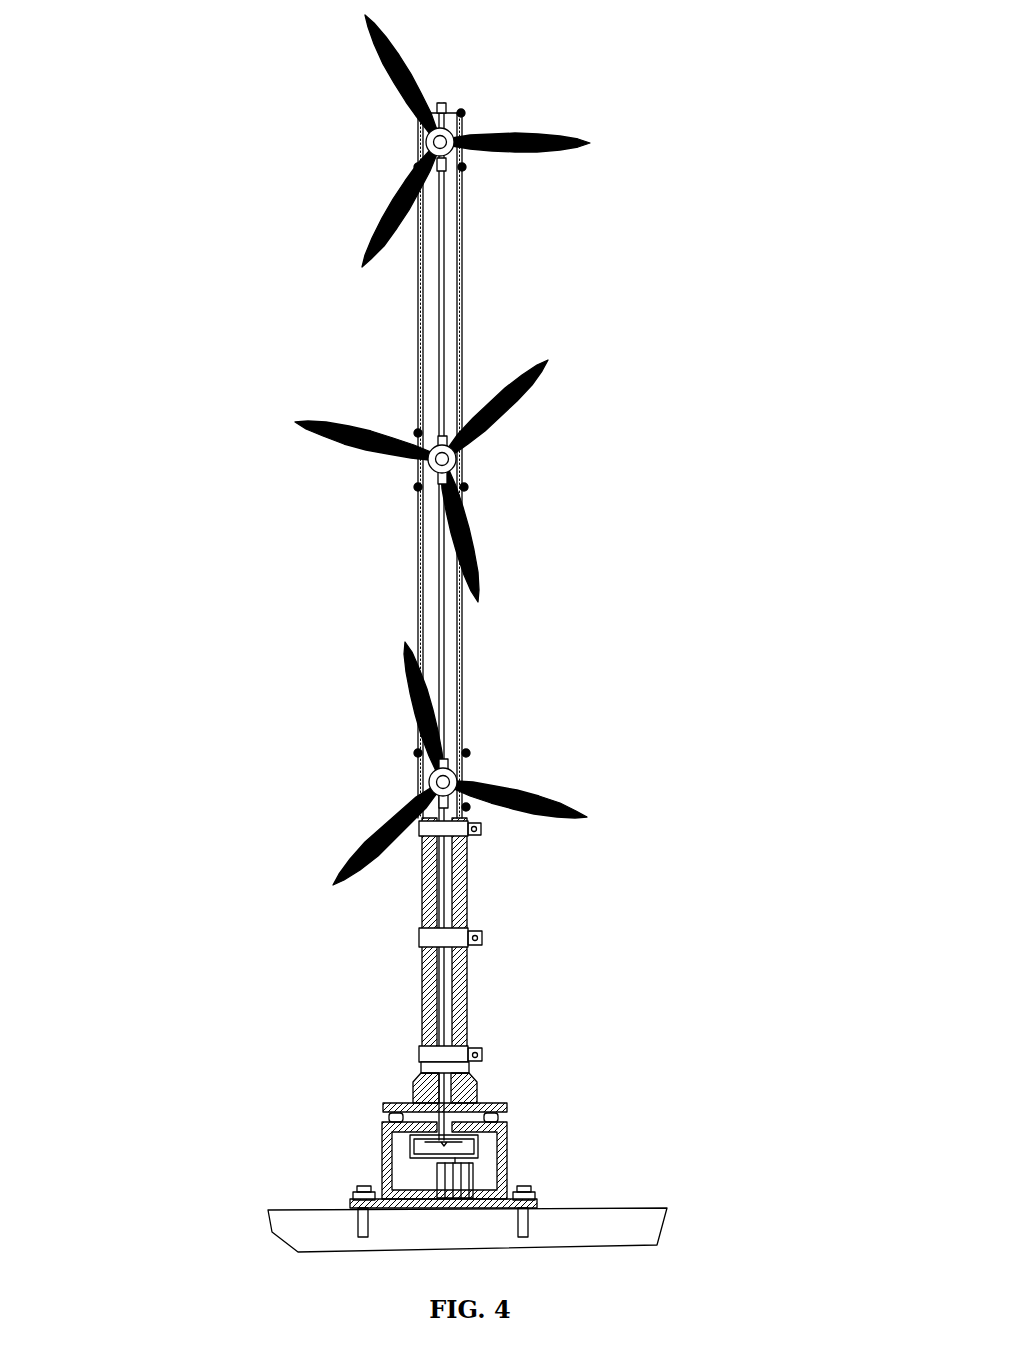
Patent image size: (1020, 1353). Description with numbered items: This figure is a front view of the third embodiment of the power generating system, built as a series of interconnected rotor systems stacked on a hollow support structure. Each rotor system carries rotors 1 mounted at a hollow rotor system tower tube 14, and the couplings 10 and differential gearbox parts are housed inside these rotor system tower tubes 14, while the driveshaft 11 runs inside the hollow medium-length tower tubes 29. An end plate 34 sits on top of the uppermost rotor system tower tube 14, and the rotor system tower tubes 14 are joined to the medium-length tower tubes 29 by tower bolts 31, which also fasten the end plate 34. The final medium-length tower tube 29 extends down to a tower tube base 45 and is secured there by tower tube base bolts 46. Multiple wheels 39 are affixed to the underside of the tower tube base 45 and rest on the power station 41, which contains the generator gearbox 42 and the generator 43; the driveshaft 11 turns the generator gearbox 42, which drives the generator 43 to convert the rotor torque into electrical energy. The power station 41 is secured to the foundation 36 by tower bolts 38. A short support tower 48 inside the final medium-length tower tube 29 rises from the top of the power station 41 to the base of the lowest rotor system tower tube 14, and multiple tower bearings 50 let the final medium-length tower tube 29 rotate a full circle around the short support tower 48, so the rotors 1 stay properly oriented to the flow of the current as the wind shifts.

The rotors 1 is at (403, 80).
The couplings 10 is at (445, 172).
The driveshaft 11 is at (444, 284).
The rotor system tower tube 14 is at (458, 150).
The medium-length tower tube 29 is at (463, 330).
The tower bolts 31 is at (465, 113).
The end plate 34 is at (441, 128).
The foundation 36 is at (646, 1226).
The tower bolts 38 is at (354, 1195).
The wheels 39 is at (391, 1117).
The power station 41 is at (383, 1165).
The generator gearbox 42 is at (478, 1145).
The generator 43 is at (473, 1175).
The tower tube base 45 is at (415, 1087).
The tower tube base bolts 46 is at (421, 1062).
The short support tower 48 is at (468, 893).
The tower bearings 50 is at (481, 836).